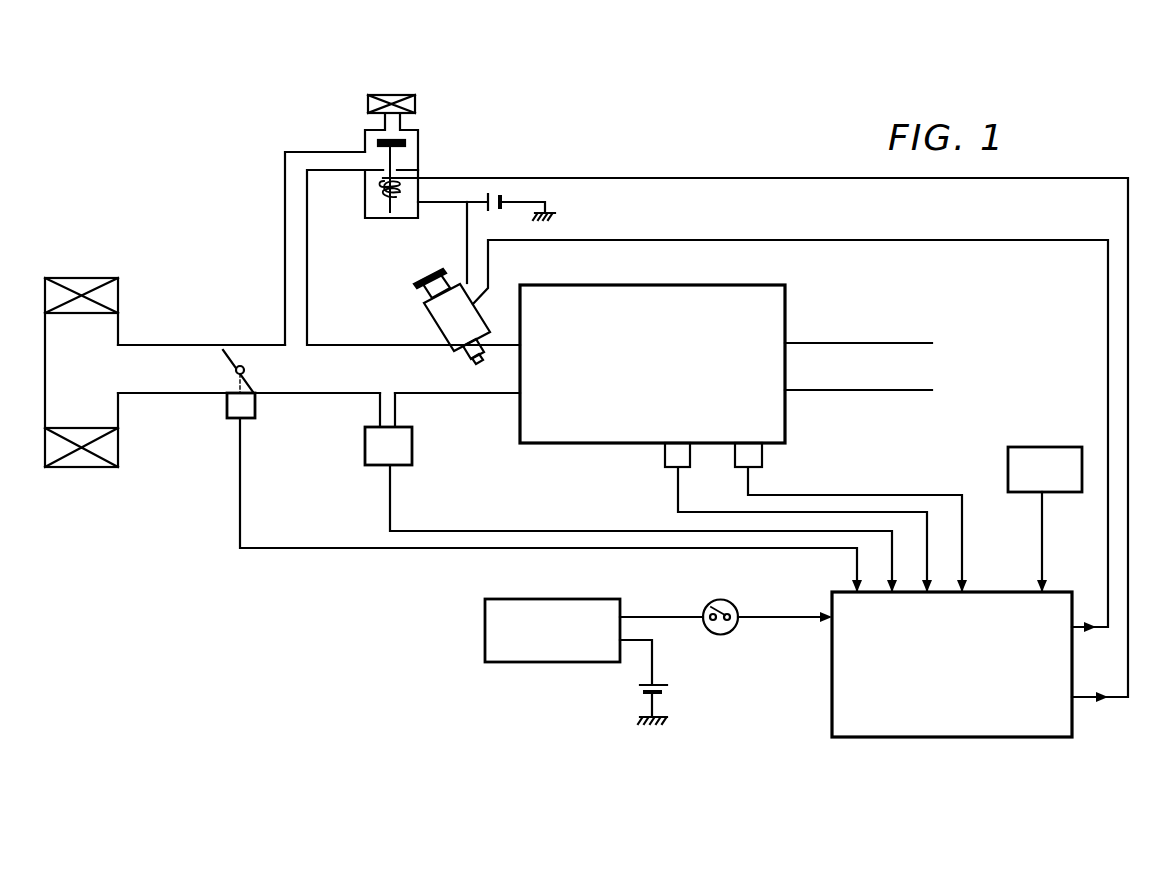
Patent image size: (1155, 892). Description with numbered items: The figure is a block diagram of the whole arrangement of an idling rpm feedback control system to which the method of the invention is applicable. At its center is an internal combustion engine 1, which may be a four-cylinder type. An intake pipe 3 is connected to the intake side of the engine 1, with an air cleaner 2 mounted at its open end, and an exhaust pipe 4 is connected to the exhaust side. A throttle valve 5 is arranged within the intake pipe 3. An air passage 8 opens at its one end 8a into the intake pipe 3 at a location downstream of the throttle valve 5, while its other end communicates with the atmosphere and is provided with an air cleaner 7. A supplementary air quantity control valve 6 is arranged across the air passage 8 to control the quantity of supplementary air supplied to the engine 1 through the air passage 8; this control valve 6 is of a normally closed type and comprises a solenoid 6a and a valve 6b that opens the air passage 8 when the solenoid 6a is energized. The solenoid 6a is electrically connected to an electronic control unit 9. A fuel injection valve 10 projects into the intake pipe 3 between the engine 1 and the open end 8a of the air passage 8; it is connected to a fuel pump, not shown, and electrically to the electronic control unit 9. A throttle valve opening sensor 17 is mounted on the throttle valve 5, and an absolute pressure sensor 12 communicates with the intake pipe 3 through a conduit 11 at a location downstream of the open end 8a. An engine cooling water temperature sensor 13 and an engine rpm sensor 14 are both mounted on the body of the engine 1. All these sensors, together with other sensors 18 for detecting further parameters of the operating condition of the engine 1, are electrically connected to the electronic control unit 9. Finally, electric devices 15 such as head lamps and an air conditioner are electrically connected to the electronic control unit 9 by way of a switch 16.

The internal combustion engine 1 is at (782, 303).
The air cleaner 2 is at (78, 468).
The intake pipe 3 is at (168, 385).
The exhaust pipe 4 is at (858, 385).
The throttle valve 5 is at (238, 352).
The supplementary air quantity control valve 6 is at (388, 184).
The solenoid 6a is at (384, 198).
The valve 6b is at (378, 143).
The air cleaner 7 is at (416, 103).
The air passage 8 is at (285, 205).
The open end of the air passage 8a is at (293, 345).
The electronic control unit 9 is at (832, 696).
The fuel injection valve 10 is at (430, 320).
The conduit 11 is at (392, 405).
The absolute pressure sensor 12 is at (413, 446).
The engine cooling water temperature sensor 13 is at (687, 455).
The engine rpm sensor 14 is at (757, 455).
The electric devices 15 is at (518, 663).
The switch 16 is at (722, 635).
The throttle valve opening sensor 17 is at (227, 407).
The other sensors 18 is at (1043, 449).